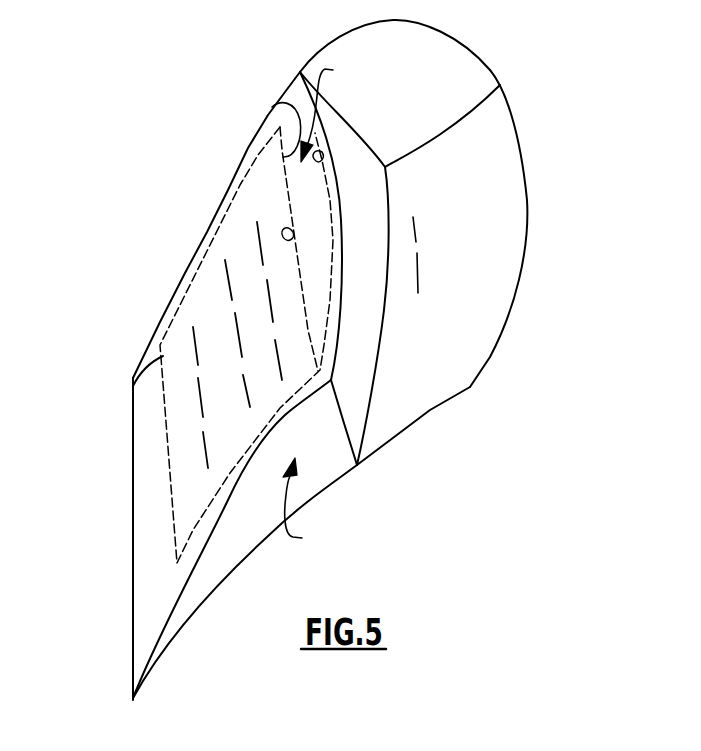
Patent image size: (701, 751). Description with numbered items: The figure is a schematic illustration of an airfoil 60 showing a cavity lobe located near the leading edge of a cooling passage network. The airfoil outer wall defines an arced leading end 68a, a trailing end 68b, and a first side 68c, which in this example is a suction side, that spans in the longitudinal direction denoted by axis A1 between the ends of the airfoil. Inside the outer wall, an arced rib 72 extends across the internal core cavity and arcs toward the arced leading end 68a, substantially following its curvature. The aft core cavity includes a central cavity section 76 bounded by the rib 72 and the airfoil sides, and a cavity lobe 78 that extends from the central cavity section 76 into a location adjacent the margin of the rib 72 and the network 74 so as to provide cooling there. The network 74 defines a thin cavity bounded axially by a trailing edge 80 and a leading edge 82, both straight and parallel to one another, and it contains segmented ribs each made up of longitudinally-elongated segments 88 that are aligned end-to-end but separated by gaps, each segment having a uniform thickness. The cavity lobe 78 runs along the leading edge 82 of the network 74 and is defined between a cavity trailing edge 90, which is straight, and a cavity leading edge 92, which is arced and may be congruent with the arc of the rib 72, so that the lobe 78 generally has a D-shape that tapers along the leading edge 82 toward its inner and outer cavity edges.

The airfoil 60 is at (480, 424).
The arced leading end 68a is at (528, 202).
The trailing end 68b is at (132, 491).
The first side 68c is at (147, 590).
The arced rib 72 is at (370, 308).
The network 74 is at (132, 385).
The central cavity section 76 is at (306, 506).
The cavity lobe 78 is at (331, 111).
The trailing edge 80 is at (166, 406).
The leading edge 82 is at (293, 232).
The longitudinally-elongated segments 88 is at (212, 308).
The cavity trailing edge 90 is at (272, 107).
The cavity leading edge 92 is at (322, 152).
The axis A1 is at (417, 253).